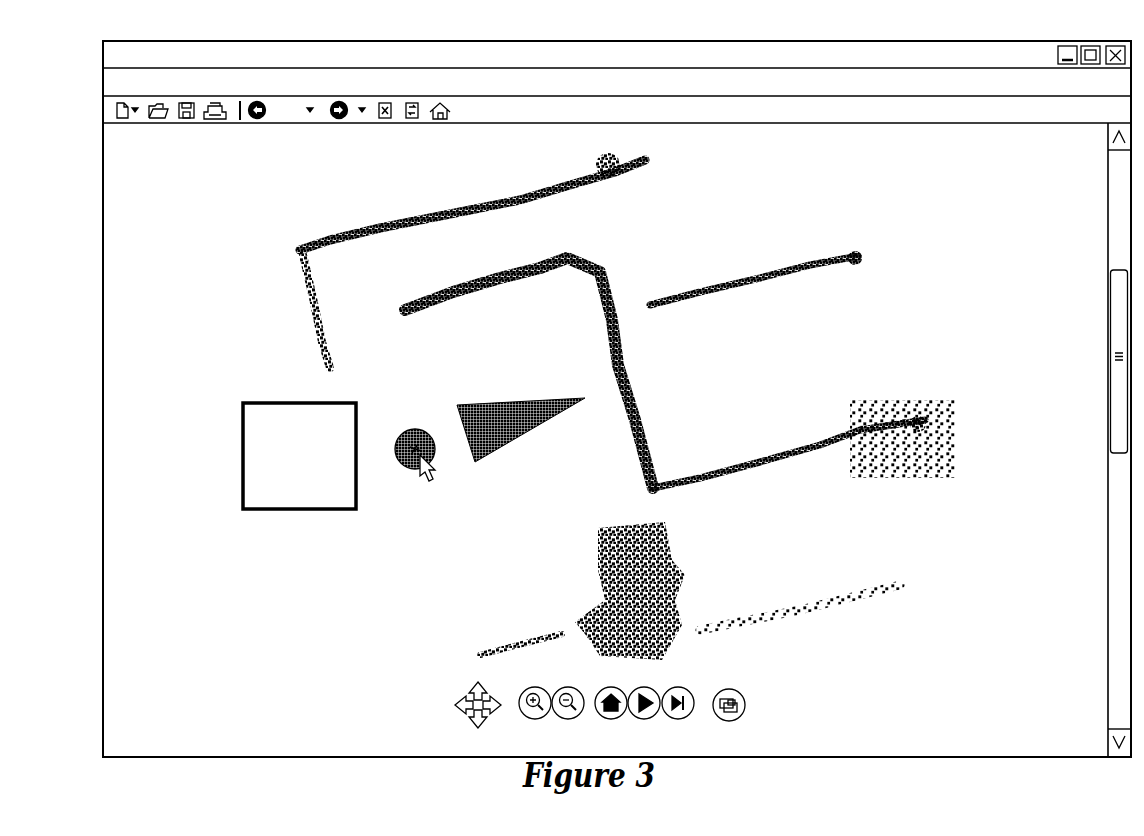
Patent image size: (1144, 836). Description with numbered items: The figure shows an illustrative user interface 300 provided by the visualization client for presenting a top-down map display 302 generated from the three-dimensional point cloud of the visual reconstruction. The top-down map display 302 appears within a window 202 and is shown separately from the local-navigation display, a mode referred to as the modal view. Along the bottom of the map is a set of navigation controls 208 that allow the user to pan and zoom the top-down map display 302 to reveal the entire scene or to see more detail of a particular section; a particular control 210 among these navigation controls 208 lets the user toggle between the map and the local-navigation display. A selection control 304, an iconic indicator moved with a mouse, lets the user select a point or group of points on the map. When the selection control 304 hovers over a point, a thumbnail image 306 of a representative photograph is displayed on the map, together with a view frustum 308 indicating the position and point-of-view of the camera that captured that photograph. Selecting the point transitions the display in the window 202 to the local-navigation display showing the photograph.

The user interface 300 is at (74, 89).
The window 202 is at (122, 192).
The top-down map display 302 is at (226, 206).
The selection control 304 is at (428, 476).
The thumbnail image 306 is at (288, 408).
The view frustum 308 is at (530, 431).
The navigation controls 208 is at (426, 700).
The control 210 is at (740, 689).